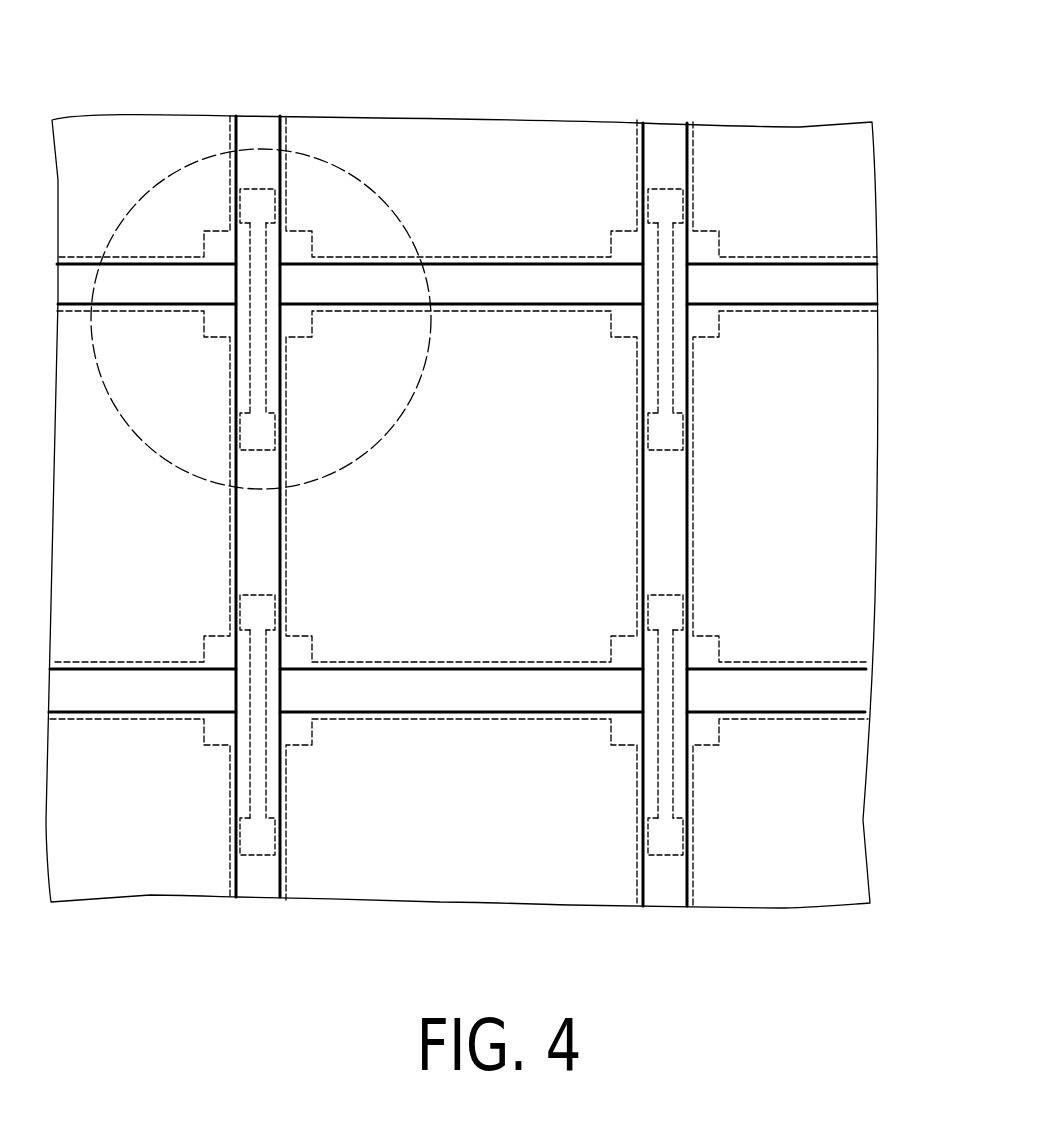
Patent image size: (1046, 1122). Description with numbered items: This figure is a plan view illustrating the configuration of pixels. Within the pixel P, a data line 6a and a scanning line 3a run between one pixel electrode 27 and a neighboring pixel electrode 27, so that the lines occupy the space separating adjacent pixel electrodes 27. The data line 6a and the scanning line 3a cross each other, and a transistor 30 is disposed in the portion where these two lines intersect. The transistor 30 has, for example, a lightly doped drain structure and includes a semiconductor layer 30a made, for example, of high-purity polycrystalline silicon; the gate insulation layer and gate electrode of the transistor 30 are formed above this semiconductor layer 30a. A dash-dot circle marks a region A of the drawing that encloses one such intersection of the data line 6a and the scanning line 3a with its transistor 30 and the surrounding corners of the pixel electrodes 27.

The pixel P is at (872, 58).
The data line 6a is at (667, 142).
The region A is at (402, 214).
The pixel electrode 27 is at (516, 380).
The transistor 30 is at (704, 244).
The scanning line 3a is at (866, 288).
The semiconductor layer 30a is at (668, 392).